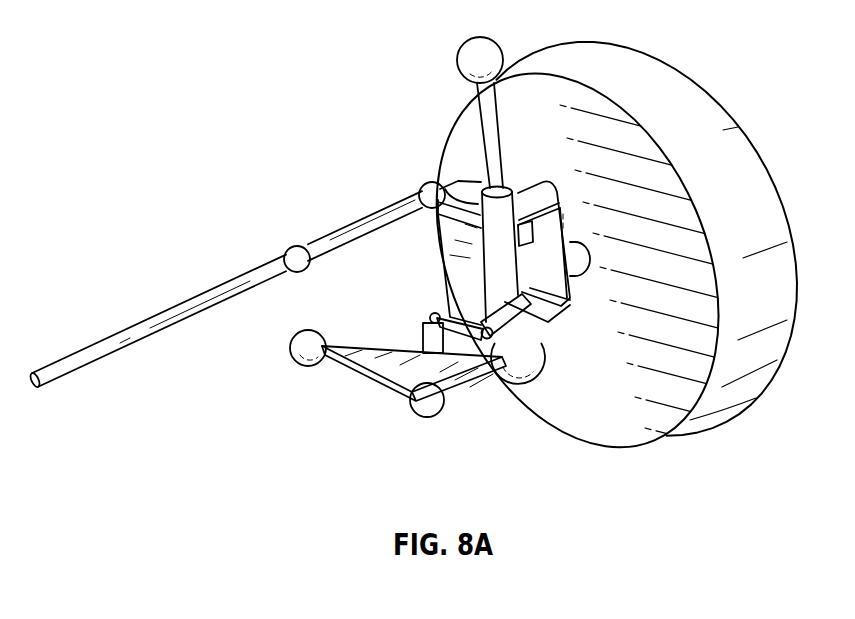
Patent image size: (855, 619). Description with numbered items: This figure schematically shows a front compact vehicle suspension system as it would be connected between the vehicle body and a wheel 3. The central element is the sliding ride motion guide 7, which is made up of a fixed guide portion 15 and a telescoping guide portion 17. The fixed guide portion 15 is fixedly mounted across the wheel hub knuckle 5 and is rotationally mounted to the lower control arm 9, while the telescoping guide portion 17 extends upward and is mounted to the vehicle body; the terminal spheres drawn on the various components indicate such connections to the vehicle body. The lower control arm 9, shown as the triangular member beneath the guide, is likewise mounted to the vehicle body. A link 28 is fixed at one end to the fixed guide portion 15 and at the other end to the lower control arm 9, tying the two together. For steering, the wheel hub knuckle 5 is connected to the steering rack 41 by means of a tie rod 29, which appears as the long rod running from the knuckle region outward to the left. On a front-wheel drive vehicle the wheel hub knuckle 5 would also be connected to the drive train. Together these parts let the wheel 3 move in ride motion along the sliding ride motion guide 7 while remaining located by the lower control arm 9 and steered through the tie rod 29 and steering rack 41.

The wheel 3 is at (541, 95).
The wheel hub knuckle 5 is at (548, 255).
The sliding ride motion guide 7 is at (427, 186).
The lower control arm 9 is at (376, 376).
The fixed guide portion 15 is at (500, 284).
The telescoping guide portion 17 is at (488, 131).
The link 28 is at (436, 318).
The tie rod 29 is at (337, 238).
The steering rack 41 is at (125, 337).